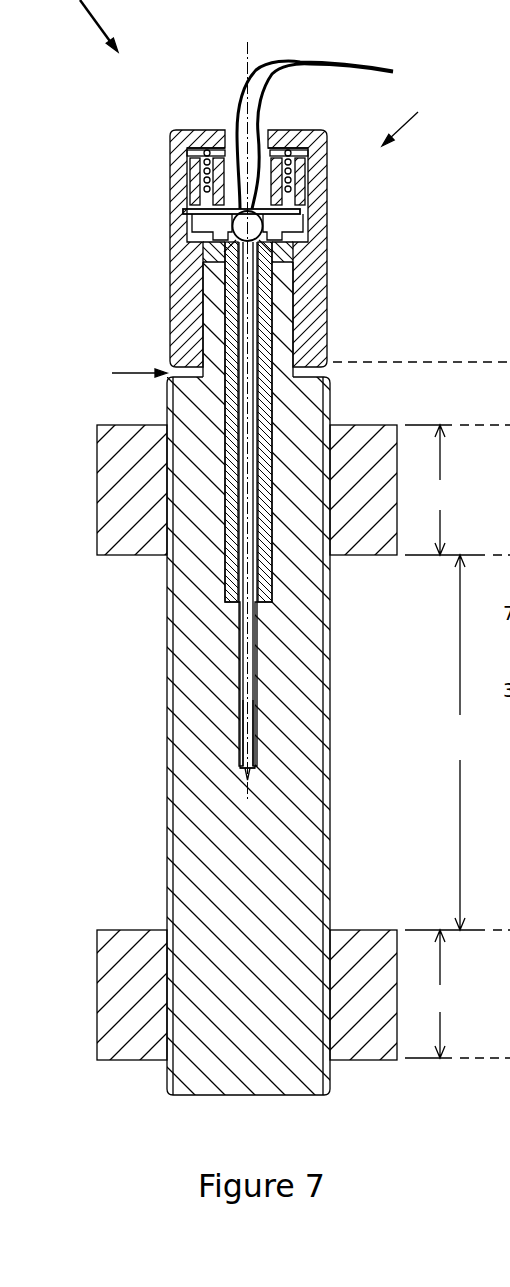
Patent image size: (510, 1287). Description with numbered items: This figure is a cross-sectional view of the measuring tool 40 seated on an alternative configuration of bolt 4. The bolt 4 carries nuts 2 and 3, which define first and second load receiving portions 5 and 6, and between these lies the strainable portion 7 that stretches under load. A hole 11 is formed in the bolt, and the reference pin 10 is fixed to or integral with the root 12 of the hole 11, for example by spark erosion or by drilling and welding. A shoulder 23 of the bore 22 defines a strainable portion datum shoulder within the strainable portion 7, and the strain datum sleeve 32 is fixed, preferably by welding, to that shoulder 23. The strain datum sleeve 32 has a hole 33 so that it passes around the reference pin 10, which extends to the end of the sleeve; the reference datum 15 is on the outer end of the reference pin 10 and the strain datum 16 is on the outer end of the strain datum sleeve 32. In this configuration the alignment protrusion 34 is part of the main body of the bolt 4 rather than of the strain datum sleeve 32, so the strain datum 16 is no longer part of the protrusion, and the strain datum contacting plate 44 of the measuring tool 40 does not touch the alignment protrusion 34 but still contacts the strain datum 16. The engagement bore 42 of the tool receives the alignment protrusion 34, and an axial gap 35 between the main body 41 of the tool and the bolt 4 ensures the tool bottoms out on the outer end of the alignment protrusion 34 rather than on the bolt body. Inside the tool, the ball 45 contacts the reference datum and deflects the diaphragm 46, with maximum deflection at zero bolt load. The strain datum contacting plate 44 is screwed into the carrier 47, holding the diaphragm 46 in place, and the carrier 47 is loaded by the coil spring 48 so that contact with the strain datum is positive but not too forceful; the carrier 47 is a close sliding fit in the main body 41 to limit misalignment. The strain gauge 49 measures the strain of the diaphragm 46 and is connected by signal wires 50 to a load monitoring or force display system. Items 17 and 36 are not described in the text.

The nut 2 is at (122, 553).
The nut 3 is at (118, 935).
The bolt 4 is at (190, 1083).
The first load receiving portion 5 is at (440, 490).
The second load receiving portion 6 is at (440, 994).
The strainable portion 7 is at (460, 742).
The reference pin 10 is at (243, 672).
The hole 11 is at (240, 727).
The root 12 is at (245, 773).
The reference datum 15 is at (277, 258).
The strain datum 16 is at (220, 258).
The bore bottom 17 is at (250, 786).
The bore 22 is at (270, 567).
The strainable portion datum shoulder 23 is at (258, 603).
The strain datum sleeve 32 is at (258, 405).
The hole 33 is at (238, 345).
The alignment protrusion 34 is at (290, 353).
The axial gap 35 is at (123, 373).
The housing right wall 36 is at (300, 310).
The measuring tool 40 is at (412, 118).
The main body 41 is at (302, 212).
The engagement bore 42 is at (200, 300).
The strain datum contacting plate 44 is at (227, 238).
The ball 45 is at (270, 240).
The diaphragm 46 is at (193, 211).
The carrier 47 is at (300, 179).
The coil spring 48 is at (299, 130).
The strain gauge 49 is at (197, 179).
The signal wires 50 is at (345, 60).